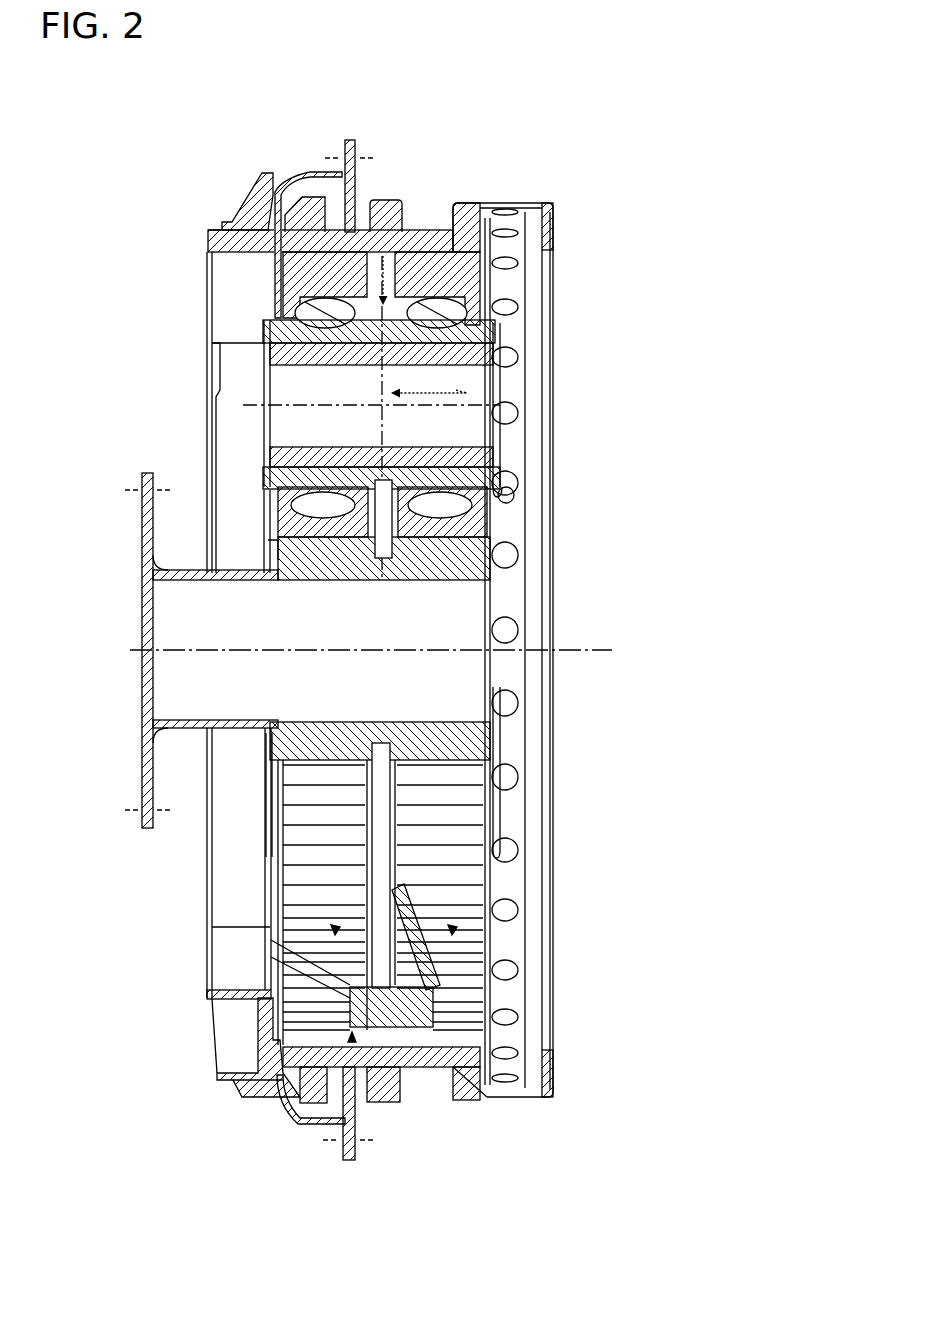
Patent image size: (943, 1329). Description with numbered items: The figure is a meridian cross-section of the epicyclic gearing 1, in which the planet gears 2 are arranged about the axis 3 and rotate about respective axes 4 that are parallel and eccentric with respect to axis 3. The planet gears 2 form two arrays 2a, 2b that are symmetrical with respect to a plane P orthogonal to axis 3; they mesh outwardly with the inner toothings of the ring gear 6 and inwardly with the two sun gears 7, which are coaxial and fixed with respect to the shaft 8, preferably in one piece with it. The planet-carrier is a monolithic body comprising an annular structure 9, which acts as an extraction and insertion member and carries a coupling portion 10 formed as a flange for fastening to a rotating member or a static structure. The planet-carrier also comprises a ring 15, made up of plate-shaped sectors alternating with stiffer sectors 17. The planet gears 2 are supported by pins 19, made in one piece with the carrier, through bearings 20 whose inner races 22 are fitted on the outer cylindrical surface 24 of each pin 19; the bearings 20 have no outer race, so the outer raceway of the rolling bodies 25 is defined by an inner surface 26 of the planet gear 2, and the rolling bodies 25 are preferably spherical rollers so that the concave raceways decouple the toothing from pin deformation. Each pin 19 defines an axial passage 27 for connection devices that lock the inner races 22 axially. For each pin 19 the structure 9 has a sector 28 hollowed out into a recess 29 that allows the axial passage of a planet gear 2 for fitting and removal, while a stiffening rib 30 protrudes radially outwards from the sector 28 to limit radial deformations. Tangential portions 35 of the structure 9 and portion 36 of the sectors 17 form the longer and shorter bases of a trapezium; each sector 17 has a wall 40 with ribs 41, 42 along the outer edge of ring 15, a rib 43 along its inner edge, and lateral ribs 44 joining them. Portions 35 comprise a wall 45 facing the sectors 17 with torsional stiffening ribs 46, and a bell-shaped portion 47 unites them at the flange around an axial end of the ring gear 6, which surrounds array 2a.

The epicyclic gearing 1 is at (612, 98).
The planet gears 2 is at (265, 522).
The first array of planet gears 2a is at (270, 1000).
The second array of planet gears 2b is at (487, 927).
The axis 3 is at (572, 650).
The axes 4 is at (470, 408).
The ring gear 6 is at (428, 228).
The sun gears 7 is at (268, 553).
The shaft 8 is at (190, 718).
The annular structure 9 is at (284, 165).
The coupling portion 10 is at (352, 140).
The ring 15 is at (397, 228).
The sectors 17 is at (418, 905).
The pins 19 is at (262, 447).
The bearings 20 is at (262, 500).
The inner races 22 is at (500, 487).
The outer cylindrical surface 24 is at (514, 497).
The rolling bodies 25 is at (470, 585).
The inner surface 26 is at (470, 437).
The axial passages 27 is at (483, 372).
The sector 28 is at (208, 248).
The recess 29 is at (236, 262).
The stiffening rib 30 is at (263, 178).
The portions 35 is at (236, 984).
The portion 36 is at (360, 1068).
The wall 40 is at (490, 990).
The rib 41 is at (282, 1080).
The rib 42 is at (487, 935).
The rib 43 is at (512, 915).
The lateral ribs 44 is at (470, 962).
The wall 45 is at (258, 1040).
The ribs 46 is at (224, 1036).
The bell-shaped portion 47 is at (300, 1118).
The plane P is at (429, 384).